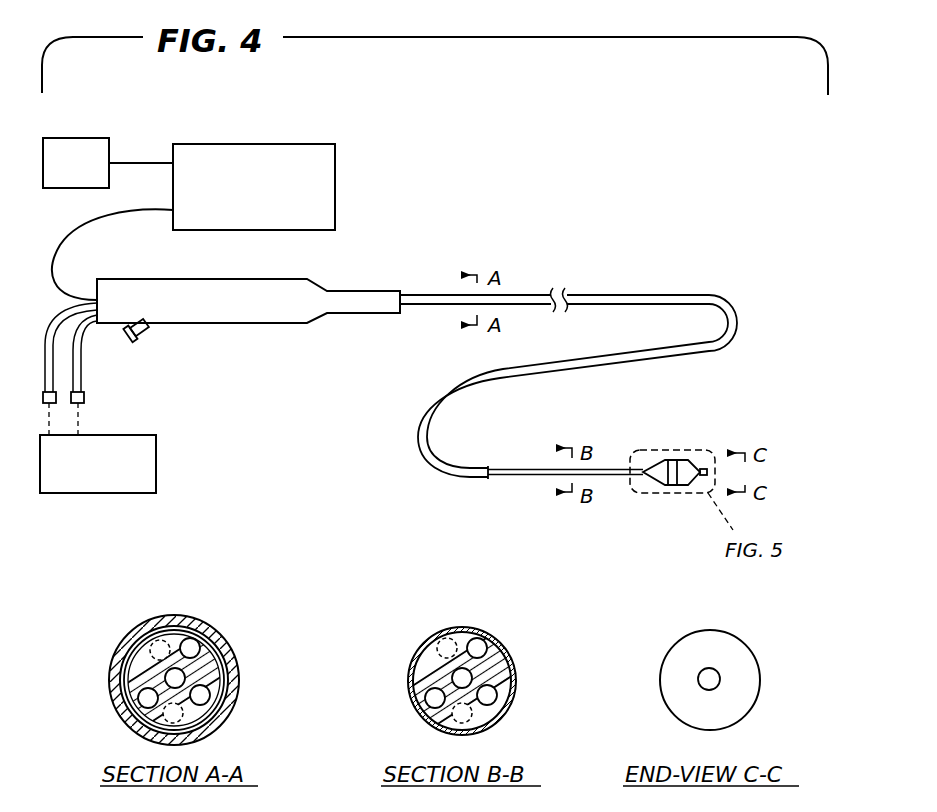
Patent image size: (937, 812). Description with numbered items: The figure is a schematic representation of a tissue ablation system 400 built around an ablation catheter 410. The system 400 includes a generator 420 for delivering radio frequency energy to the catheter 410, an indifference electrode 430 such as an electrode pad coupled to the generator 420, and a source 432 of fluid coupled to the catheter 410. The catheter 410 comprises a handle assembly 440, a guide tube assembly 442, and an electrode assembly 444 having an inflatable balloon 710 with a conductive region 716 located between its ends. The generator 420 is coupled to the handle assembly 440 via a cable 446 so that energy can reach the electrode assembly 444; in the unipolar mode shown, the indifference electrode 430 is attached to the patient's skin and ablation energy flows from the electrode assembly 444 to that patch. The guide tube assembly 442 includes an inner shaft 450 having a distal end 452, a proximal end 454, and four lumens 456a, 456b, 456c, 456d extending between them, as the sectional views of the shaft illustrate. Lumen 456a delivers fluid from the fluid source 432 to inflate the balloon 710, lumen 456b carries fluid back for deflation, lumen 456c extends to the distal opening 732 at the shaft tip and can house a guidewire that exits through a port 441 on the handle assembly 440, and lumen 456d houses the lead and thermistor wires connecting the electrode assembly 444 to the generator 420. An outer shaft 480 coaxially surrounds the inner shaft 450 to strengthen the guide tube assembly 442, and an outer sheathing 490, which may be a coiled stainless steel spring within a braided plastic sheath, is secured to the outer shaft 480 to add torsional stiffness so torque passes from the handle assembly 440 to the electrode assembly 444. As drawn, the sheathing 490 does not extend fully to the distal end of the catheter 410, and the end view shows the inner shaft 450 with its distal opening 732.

The tissue ablation system 400 is at (558, 240).
The ablation catheter 410 is at (770, 515).
The generator 420 is at (273, 143).
The indifference electrode 430 is at (107, 137).
The source of fluid 432 is at (52, 493).
The handle assembly 440 is at (257, 323).
The port 441 is at (145, 345).
The guide tube assembly 442 is at (410, 352).
The electrode assembly 444 is at (712, 498).
The cable 446 is at (73, 225).
The inner shaft 450 is at (227, 678).
The distal end 452 is at (706, 465).
The proximal end 454 is at (402, 292).
The lumen 456a is at (210, 693).
The lumen 456b is at (138, 697).
The lumen 456c is at (152, 657).
The lumen 456d is at (194, 638).
The outer shaft 480 is at (528, 478).
The outer sheathing 490 is at (432, 452).
The balloon 710 is at (688, 462).
The conductive region 716 is at (670, 460).
The distal opening 732 is at (720, 678).